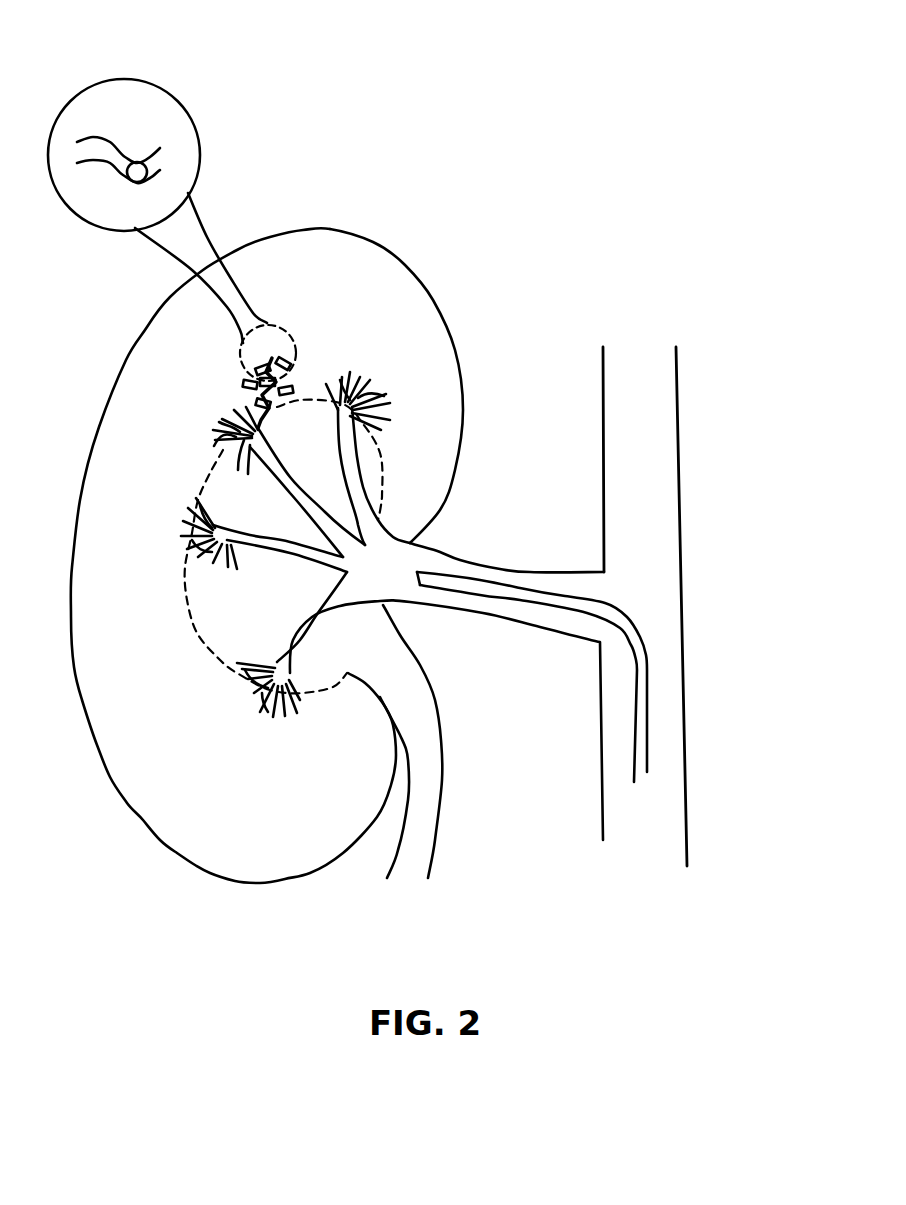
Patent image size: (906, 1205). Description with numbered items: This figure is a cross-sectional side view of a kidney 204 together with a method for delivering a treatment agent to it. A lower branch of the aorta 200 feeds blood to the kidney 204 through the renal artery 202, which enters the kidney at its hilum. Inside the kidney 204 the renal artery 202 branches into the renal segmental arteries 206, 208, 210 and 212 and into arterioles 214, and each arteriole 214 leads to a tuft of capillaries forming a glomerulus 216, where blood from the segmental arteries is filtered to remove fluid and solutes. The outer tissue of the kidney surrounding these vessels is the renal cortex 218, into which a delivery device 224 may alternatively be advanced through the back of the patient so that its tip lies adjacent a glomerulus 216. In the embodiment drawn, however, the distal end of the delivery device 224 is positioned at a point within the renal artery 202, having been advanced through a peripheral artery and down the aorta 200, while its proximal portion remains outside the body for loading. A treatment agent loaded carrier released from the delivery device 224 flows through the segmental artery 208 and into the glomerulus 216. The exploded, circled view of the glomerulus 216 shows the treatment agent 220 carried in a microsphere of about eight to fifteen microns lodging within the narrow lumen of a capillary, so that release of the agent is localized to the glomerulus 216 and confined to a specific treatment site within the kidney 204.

The aorta 200 is at (647, 502).
The renal artery 202 is at (488, 578).
The kidney 204 is at (433, 297).
The renal segmental artery 206 is at (353, 470).
The renal segmental artery 208 is at (297, 483).
The renal segmental artery 210 is at (252, 530).
The renal segmental artery 212 is at (295, 632).
The arteriole 214 is at (270, 416).
The glomerulus 216 is at (295, 367).
The renal cortex 218 is at (360, 287).
The treatment agent 220 is at (138, 168).
The delivery device 224 is at (538, 603).